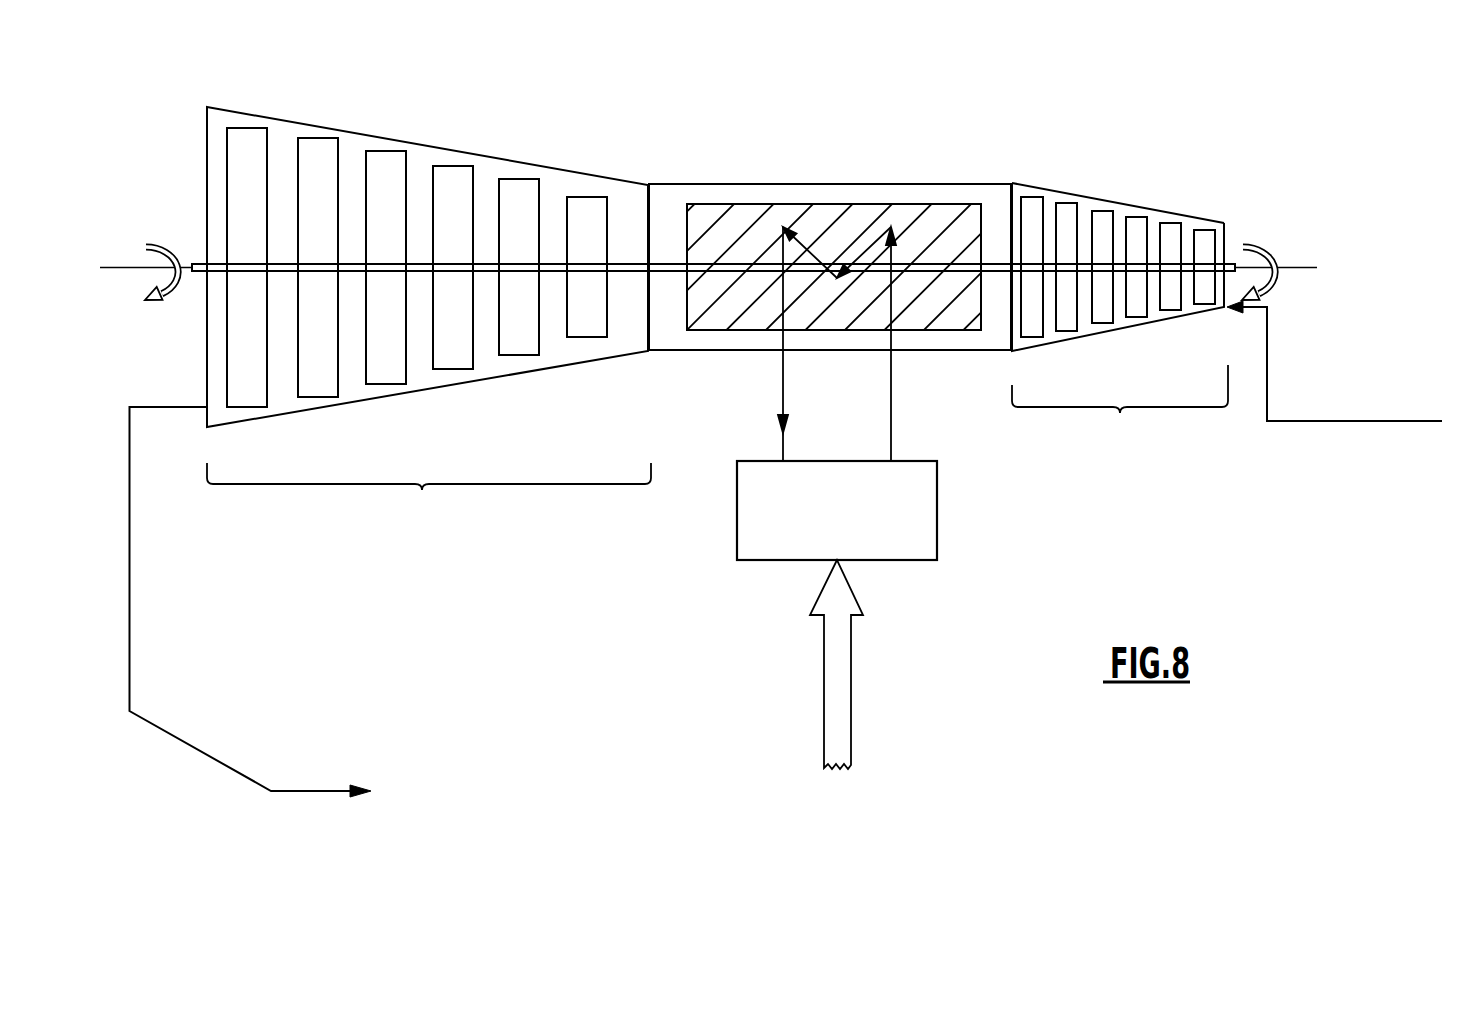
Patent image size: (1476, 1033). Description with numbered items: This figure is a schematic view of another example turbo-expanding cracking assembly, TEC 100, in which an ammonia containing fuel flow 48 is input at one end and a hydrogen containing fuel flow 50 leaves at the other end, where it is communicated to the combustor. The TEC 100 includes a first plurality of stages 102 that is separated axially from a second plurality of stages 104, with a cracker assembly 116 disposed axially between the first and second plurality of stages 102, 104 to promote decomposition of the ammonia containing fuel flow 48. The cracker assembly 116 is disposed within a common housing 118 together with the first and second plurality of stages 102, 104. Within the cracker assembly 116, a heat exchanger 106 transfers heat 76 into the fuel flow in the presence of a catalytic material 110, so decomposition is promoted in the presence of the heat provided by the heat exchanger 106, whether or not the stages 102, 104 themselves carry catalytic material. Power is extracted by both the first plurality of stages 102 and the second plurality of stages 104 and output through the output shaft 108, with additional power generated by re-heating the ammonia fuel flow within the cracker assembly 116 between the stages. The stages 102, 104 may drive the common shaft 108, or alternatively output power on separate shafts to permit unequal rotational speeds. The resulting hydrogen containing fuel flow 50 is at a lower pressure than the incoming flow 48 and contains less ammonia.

The turbo-expanding cracking assembly 100 is at (1200, 107).
The first plurality of stages 102 is at (1120, 312).
The second plurality of stages 104 is at (422, 490).
The heat exchanger 106 is at (860, 522).
The output shaft 108 is at (1236, 262).
The catalytic material 110 is at (734, 222).
The cracker assembly 116 is at (946, 192).
The common housing 118 is at (1164, 208).
The ammonia containing fuel flow 48 is at (1303, 421).
The hydrogen containing fuel flow 50 is at (232, 772).
The heat 76 is at (840, 706).